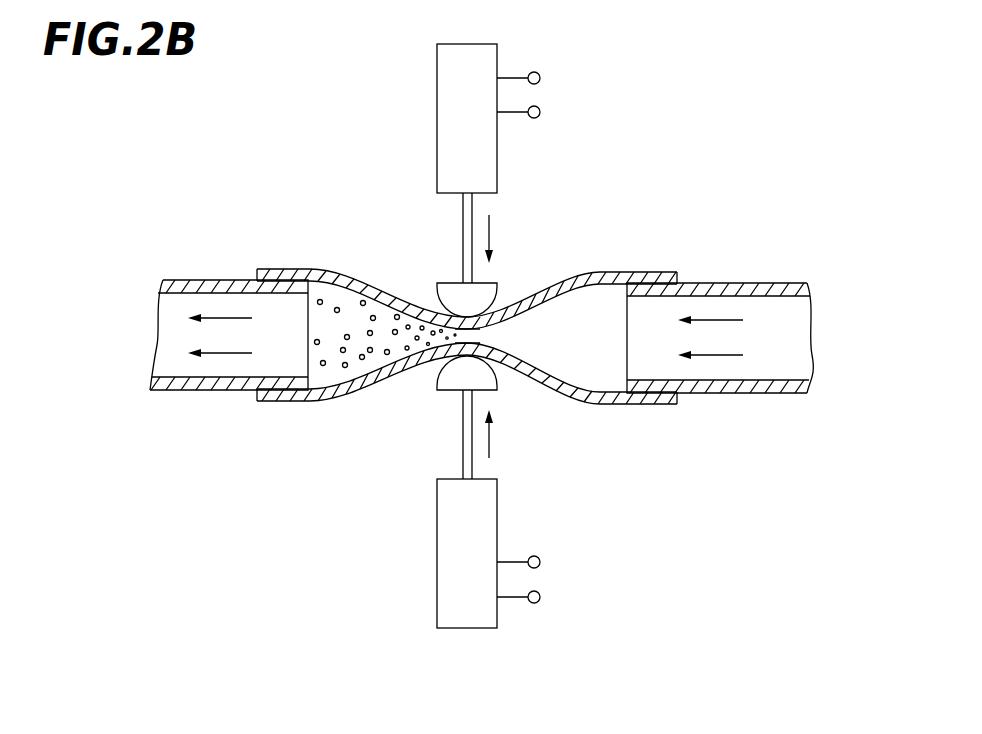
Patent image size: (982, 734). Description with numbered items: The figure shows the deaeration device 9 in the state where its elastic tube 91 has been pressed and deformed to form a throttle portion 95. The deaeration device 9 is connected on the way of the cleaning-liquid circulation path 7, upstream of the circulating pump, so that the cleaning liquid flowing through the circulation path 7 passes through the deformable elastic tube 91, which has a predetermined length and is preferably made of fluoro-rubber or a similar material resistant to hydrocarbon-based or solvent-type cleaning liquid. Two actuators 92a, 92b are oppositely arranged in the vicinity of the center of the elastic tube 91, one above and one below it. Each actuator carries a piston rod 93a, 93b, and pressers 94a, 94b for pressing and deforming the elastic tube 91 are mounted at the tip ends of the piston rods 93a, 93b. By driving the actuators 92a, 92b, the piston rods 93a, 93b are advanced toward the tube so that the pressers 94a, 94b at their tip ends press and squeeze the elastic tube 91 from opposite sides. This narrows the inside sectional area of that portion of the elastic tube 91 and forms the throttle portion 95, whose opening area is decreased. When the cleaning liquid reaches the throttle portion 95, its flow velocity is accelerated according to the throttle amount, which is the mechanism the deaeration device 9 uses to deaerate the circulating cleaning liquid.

The deaeration device 9 is at (345, 50).
The cleaning-liquid circulation path 7 is at (203, 280).
The elastic tube 91 is at (551, 272).
The actuator 92a is at (437, 118).
The actuator 92b is at (437, 555).
The piston rod 93a is at (463, 217).
The piston rod 93b is at (463, 458).
The presser 94a is at (447, 282).
The presser 94b is at (448, 392).
The throttle portion 95 is at (472, 336).